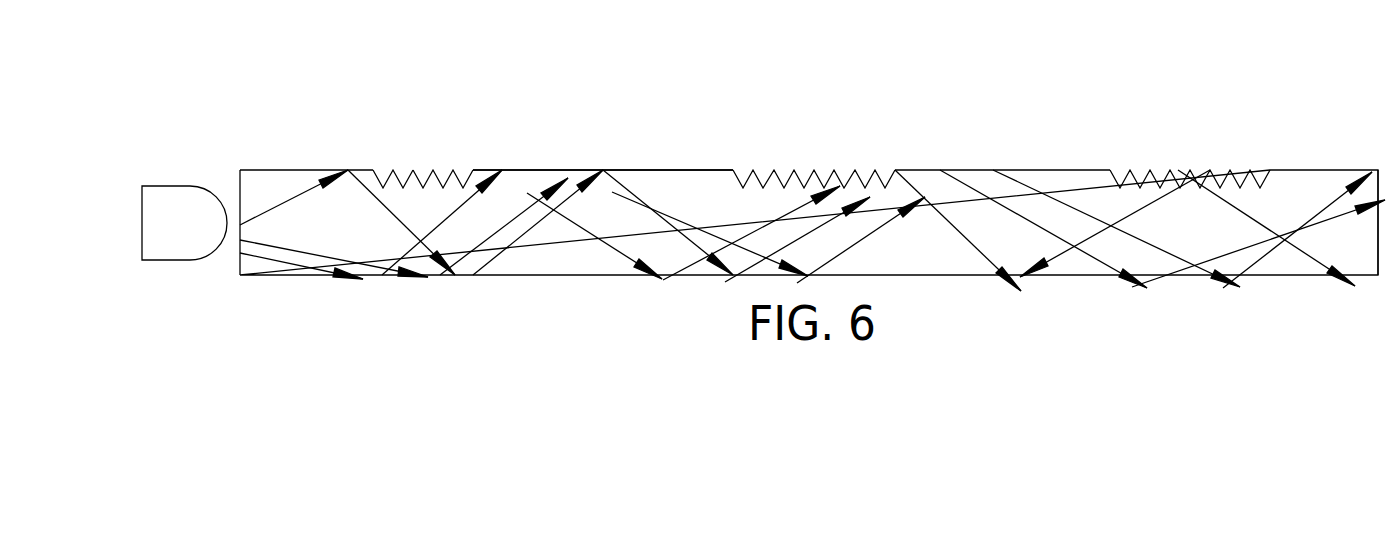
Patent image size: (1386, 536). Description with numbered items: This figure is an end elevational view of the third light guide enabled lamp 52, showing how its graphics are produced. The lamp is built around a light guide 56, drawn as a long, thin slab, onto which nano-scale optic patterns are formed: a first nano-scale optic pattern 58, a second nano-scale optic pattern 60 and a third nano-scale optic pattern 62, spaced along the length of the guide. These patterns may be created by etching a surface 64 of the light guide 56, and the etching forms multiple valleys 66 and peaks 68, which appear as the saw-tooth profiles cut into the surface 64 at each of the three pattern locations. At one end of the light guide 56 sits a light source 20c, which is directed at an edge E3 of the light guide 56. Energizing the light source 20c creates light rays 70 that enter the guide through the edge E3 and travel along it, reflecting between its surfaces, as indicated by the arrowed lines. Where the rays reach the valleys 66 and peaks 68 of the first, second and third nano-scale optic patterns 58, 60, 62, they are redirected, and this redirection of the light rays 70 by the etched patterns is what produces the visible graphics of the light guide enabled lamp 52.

The third light guide enabled lamp 52 is at (1027, 48).
The light guide 56 is at (1378, 262).
The first nano-scale optic pattern 58 is at (479, 113).
The second nano-scale optic pattern 60 is at (922, 88).
The third nano-scale optic pattern 62 is at (1292, 88).
The surface 64 is at (651, 148).
The valleys 66 is at (382, 187).
The peaks 68 is at (468, 158).
The light rays 70 is at (297, 197).
The light source 20c is at (172, 200).
The edge E3 is at (222, 270).